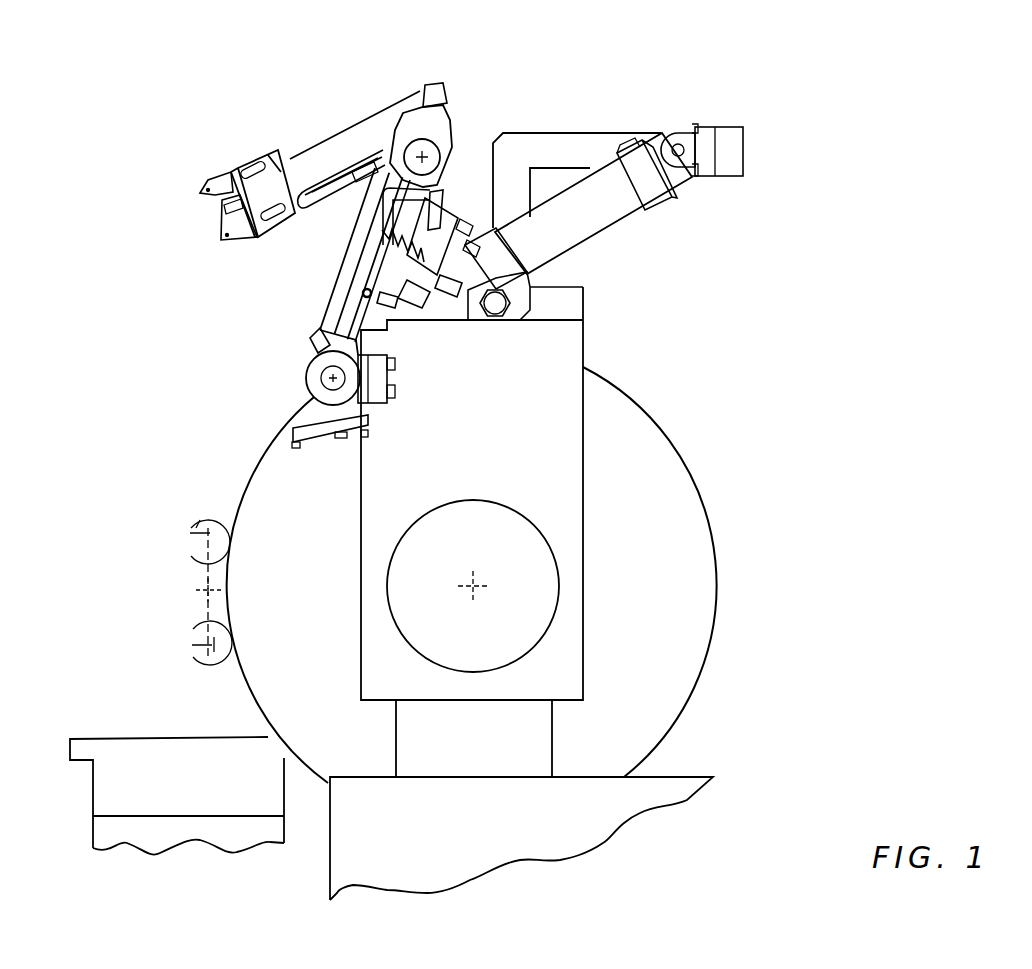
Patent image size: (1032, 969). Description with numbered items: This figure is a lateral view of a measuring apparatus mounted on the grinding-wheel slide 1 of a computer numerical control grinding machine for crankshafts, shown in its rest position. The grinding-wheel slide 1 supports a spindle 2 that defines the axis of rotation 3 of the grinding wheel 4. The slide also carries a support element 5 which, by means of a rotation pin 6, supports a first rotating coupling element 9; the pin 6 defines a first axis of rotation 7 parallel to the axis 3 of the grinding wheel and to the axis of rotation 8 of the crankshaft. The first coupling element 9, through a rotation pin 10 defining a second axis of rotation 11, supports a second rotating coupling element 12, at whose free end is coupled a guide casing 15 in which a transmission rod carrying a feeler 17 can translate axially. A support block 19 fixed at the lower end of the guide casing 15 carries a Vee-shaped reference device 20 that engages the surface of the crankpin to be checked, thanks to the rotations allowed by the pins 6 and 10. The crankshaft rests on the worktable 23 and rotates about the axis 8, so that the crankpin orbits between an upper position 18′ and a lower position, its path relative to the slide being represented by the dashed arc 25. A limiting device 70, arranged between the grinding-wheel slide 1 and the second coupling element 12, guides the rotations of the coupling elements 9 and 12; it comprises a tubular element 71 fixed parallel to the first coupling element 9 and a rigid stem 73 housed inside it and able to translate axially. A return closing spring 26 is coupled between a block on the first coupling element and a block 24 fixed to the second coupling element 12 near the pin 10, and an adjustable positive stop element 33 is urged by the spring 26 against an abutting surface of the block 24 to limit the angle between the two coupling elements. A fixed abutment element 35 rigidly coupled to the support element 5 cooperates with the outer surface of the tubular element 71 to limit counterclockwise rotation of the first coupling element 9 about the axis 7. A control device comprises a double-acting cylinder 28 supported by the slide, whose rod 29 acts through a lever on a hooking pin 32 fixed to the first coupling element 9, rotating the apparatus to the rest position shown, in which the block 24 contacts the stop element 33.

The grinding-wheel slide 1 is at (643, 788).
The spindle 2 is at (480, 525).
The axis of rotation 3 is at (473, 586).
The grinding wheel 4 is at (687, 583).
The support element 5 is at (523, 300).
The rotation pin 6 is at (327, 385).
The first axis of rotation 7 is at (333, 378).
The axis of rotation 8 is at (208, 595).
The first rotating coupling element 9 is at (353, 328).
The rotation pin 10 is at (422, 157).
The second axis of rotation 11 is at (527, 133).
The second rotating coupling element 12 is at (430, 117).
The guide casing 15 is at (323, 160).
The feeler 17 is at (223, 210).
The upper position of crankpin 18′ is at (190, 533).
The support block 19 is at (262, 140).
The reference device 20 is at (220, 184).
The worktable 23 is at (115, 748).
The block 24 is at (432, 207).
The arc 25 is at (206, 582).
The return closing spring 26 is at (403, 268).
The double-acting cylinder 28 is at (593, 187).
The rod 29 is at (480, 323).
The hooking element 32 is at (357, 290).
The adjustable positive stop element 33 is at (450, 218).
The additional fixed abutment element 35 is at (293, 427).
The limiting device 70 is at (310, 274).
The tubular element 71 is at (372, 217).
The stem 73 is at (320, 345).